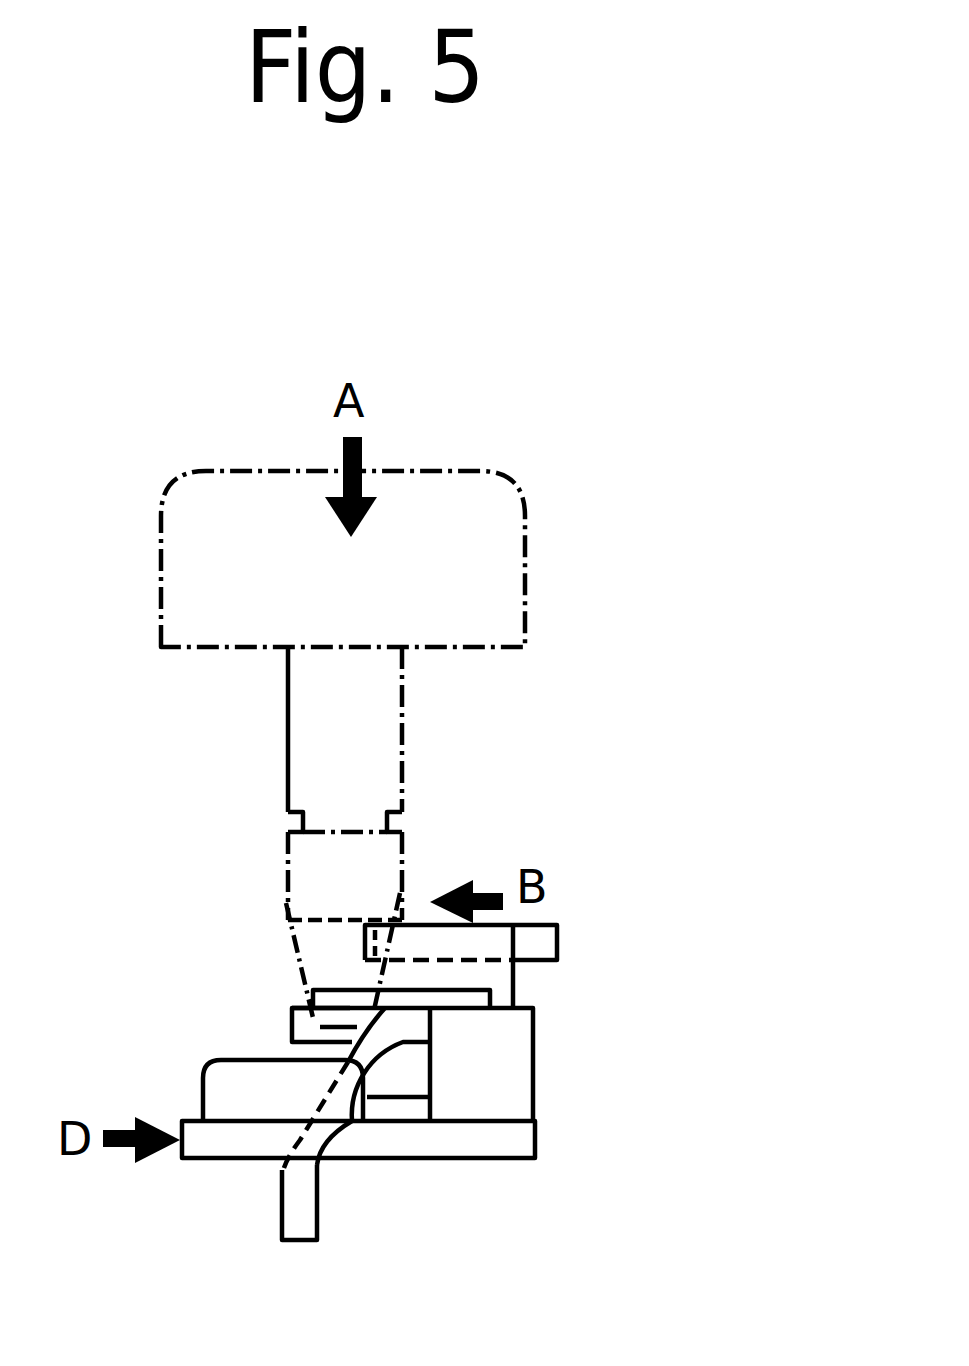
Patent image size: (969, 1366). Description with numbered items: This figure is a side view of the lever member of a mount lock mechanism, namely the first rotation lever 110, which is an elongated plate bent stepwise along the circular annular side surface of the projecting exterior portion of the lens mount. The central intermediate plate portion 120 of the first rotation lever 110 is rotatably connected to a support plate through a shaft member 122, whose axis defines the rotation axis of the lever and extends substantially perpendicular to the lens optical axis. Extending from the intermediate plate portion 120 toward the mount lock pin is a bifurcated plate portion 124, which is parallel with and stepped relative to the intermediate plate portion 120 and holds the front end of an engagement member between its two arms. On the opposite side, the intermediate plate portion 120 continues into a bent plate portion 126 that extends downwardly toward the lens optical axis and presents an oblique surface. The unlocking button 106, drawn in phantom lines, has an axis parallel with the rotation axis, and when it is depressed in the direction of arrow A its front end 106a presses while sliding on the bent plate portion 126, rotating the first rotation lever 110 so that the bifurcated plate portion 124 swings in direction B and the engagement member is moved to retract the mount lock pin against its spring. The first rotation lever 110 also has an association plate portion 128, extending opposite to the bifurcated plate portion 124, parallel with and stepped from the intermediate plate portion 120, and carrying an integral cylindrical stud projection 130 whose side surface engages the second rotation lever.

The unlocking button 106 is at (525, 541).
The front end of the unlocking button 106a is at (303, 960).
The first rotation lever 110 is at (575, 1103).
The intermediate plate portion 120 is at (292, 1023).
The shaft member 122 is at (490, 1001).
The bifurcated plate portion 124 is at (560, 937).
The bent plate portion 126 is at (352, 1123).
The association plate portion 128 is at (490, 1147).
The projection 130 is at (213, 1097).